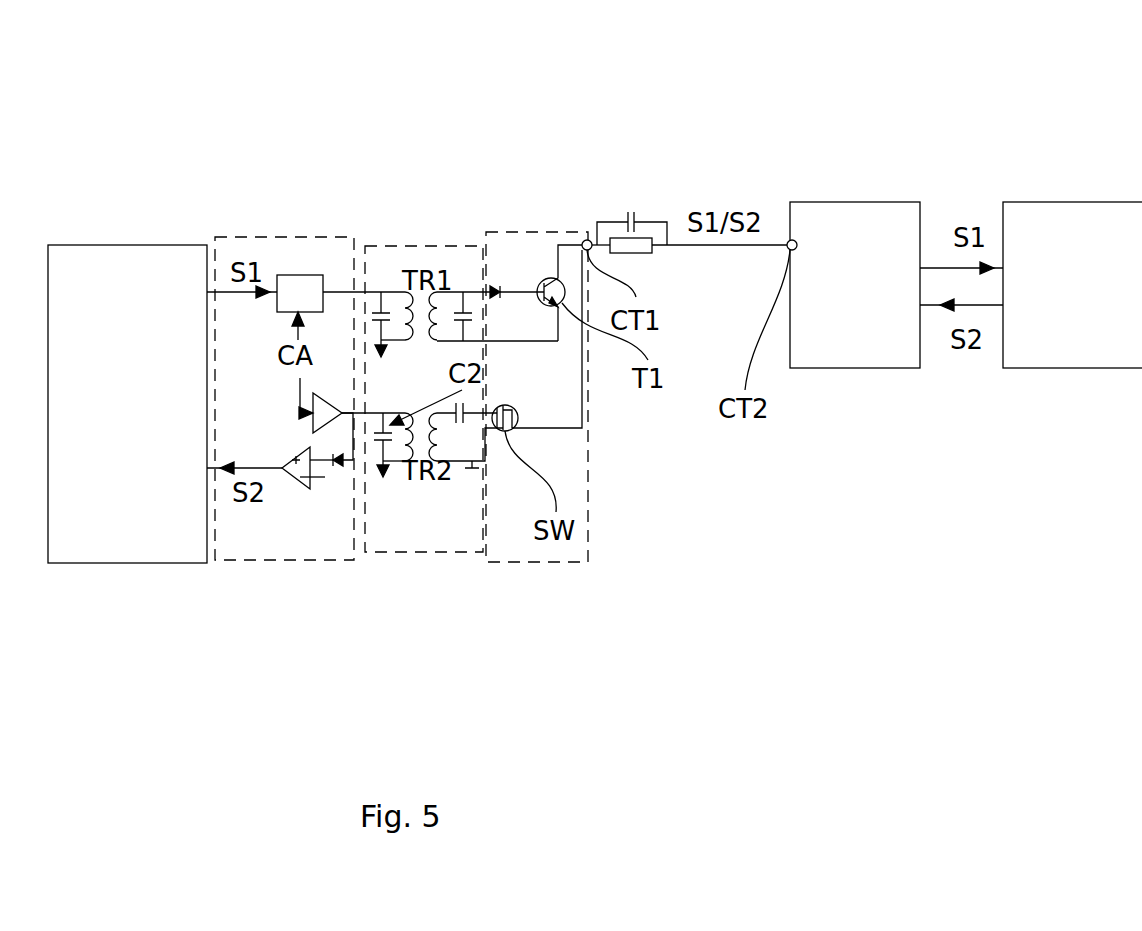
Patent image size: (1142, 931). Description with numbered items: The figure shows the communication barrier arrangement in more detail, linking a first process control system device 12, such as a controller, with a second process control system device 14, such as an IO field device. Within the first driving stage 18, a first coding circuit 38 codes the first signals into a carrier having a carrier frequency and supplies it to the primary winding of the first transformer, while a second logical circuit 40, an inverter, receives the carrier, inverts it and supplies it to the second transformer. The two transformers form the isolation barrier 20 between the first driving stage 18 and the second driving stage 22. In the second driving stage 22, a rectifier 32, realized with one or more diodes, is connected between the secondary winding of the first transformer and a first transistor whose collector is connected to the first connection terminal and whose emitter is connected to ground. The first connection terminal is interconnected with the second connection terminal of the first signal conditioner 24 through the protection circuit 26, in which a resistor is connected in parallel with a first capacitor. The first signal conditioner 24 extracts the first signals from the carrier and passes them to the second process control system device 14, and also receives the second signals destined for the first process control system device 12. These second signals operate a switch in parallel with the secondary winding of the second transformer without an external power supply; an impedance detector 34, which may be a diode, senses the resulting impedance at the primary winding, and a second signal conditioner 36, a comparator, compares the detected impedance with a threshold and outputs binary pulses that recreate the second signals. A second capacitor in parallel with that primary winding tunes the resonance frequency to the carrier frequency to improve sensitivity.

The first process control system device 12 is at (127, 404).
The second process control system device 14 is at (1072, 285).
The first driving stage 18 is at (270, 560).
The isolation barrier 20 is at (424, 246).
The second driving stage 22 is at (537, 232).
The first signal conditioner 24 is at (855, 285).
The protection circuit 26 is at (656, 164).
The rectifier 32 is at (496, 266).
The impedance detector 34 is at (336, 490).
The second signal conditioner 36 is at (262, 483).
The first coding circuit 38 is at (300, 293).
The second logical circuit 40 is at (333, 399).